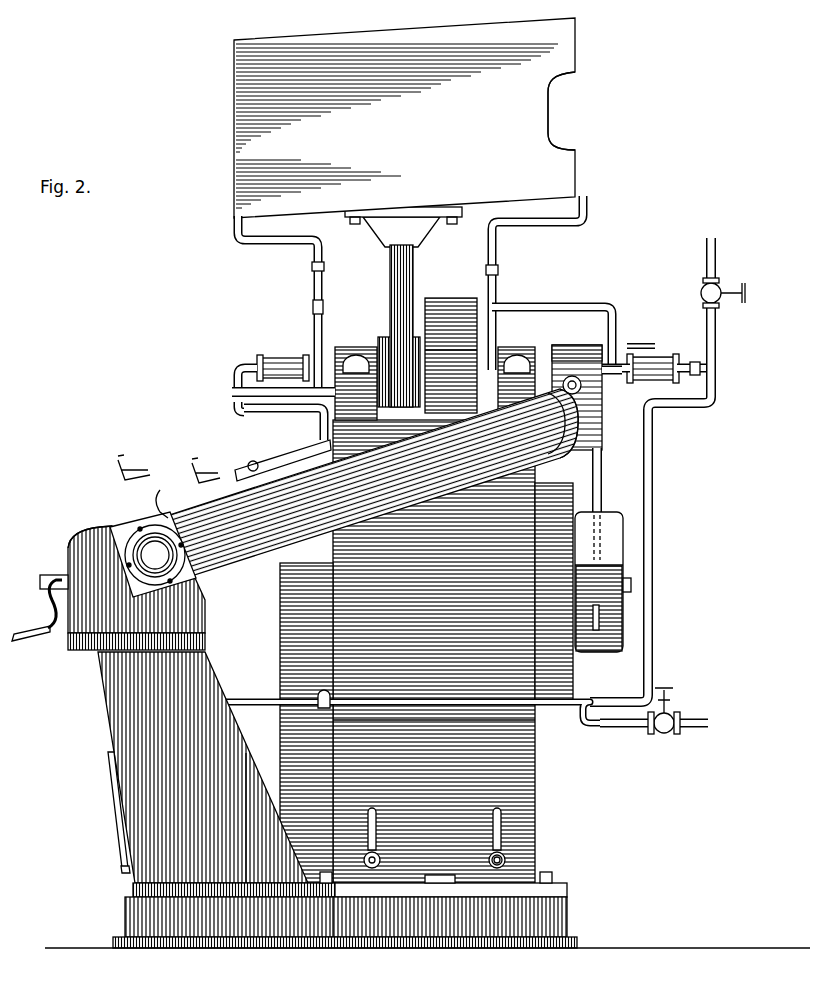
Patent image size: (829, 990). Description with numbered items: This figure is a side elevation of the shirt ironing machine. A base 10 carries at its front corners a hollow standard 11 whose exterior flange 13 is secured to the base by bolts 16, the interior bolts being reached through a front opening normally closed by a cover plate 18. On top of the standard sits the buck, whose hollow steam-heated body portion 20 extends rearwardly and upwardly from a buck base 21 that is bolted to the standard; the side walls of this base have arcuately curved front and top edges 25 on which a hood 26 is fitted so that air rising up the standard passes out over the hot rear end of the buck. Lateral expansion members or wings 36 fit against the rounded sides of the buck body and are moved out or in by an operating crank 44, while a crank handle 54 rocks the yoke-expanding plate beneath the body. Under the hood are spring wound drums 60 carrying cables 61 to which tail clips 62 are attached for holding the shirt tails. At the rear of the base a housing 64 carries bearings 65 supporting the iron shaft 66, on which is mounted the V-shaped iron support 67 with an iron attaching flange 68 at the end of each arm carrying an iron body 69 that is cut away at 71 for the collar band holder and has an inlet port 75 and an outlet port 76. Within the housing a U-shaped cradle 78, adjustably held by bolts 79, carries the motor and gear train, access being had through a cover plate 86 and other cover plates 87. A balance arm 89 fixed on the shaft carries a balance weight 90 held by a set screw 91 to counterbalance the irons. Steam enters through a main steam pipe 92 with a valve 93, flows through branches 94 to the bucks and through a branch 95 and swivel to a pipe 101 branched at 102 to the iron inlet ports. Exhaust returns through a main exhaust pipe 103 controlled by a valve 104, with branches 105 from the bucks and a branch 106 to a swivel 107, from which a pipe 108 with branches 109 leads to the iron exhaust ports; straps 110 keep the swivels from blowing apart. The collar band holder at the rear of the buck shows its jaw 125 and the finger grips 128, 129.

The base 10 is at (125, 918).
The standard 11 is at (115, 798).
The exterior flange 13 is at (302, 892).
The bolts 16 is at (326, 872).
The cover plate 18 is at (118, 862).
The body portion 20 is at (128, 528).
The buck base 21 is at (205, 625).
The arcuately curved front and top edges 25 is at (105, 545).
The hood 26 is at (68, 550).
The lateral expansion members or wings 36 is at (369, 483).
The operating crank 44 is at (50, 602).
The crank handle 54 is at (68, 556).
The spring wound drums 60 is at (155, 555).
The cables 61 is at (167, 493).
The tail clips 62 is at (140, 473).
The housing 64 is at (535, 790).
The bearings 65 is at (352, 347).
The iron shaft 66 is at (556, 350).
The iron support 67 is at (389, 287).
The iron attaching flange 68 is at (440, 208).
The iron body 69 is at (577, 40).
The cut away 71 is at (552, 130).
The inlet port 75 is at (580, 183).
The outlet port 76 is at (240, 226).
The cradle 78 is at (508, 834).
The bolts 79 is at (506, 858).
The cover plate 86 is at (280, 665).
The cover plates 87 is at (443, 298).
The balance arm 89 is at (603, 461).
The balance weight 90 is at (608, 512).
The set screw 91 is at (634, 585).
The main steam pipe 92 is at (718, 261).
The valve 93 is at (701, 289).
The branches 94 is at (654, 646).
The branch 95 is at (704, 380).
The pipe 101 is at (614, 330).
The branch 102 is at (497, 308).
The main exhaust pipe 103 is at (700, 718).
The valve 104 is at (662, 736).
The branches 105 is at (200, 698).
The branch 106 is at (238, 416).
The swivel 107 is at (278, 357).
The pipe 108 is at (300, 413).
The branches 109 is at (314, 292).
The straps 110 is at (232, 392).
The jaw 125 is at (548, 404).
The finger grip 128 is at (618, 332).
The finger grip 129 is at (600, 380).